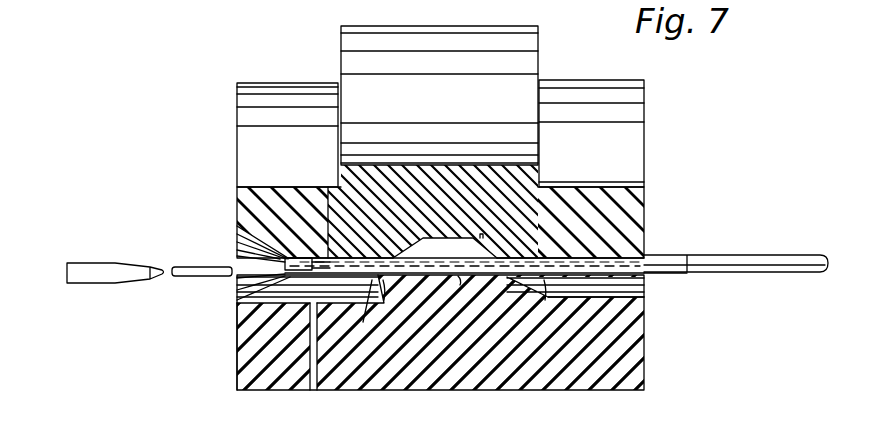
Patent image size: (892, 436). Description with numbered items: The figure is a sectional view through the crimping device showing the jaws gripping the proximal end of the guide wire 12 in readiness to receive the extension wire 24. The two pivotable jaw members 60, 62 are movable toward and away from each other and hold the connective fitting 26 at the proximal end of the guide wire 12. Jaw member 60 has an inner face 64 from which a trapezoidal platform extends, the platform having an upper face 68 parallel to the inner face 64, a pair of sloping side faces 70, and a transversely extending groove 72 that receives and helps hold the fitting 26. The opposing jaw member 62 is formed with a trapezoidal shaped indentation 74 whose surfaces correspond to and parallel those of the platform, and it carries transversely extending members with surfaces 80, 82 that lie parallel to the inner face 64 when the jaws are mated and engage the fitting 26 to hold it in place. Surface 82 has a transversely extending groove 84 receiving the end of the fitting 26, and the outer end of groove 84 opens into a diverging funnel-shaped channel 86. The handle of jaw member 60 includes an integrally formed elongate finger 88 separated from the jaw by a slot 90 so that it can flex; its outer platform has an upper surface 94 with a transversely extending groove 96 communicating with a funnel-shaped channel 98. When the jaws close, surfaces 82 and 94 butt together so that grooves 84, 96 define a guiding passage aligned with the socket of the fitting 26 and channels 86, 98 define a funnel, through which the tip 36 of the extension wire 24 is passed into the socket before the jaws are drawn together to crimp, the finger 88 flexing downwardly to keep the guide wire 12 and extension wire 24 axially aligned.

The guide wire 12 is at (750, 253).
The extension wire 24 is at (100, 290).
The connective fitting 26 is at (669, 281).
The tip 36 is at (157, 265).
The jaw member 60 is at (660, 358).
The jaw member 62 is at (660, 195).
The inner face 64 is at (646, 286).
The upper face 68 is at (522, 240).
The sloping side faces 70 is at (383, 300).
The transversely extending groove 72 is at (460, 285).
The trapezoidal shaped indentation 74 is at (503, 242).
The surface 80 is at (650, 236).
The surface 82 is at (252, 262).
The transversely extending groove 84 is at (327, 192).
The funnel-shaped channel 86 is at (248, 252).
The elongate finger 88 is at (237, 357).
The slot 90 is at (313, 393).
The upper surface 94 is at (250, 280).
The transversely extending groove 96 is at (250, 295).
The funnel-shaped channel 98 is at (255, 283).